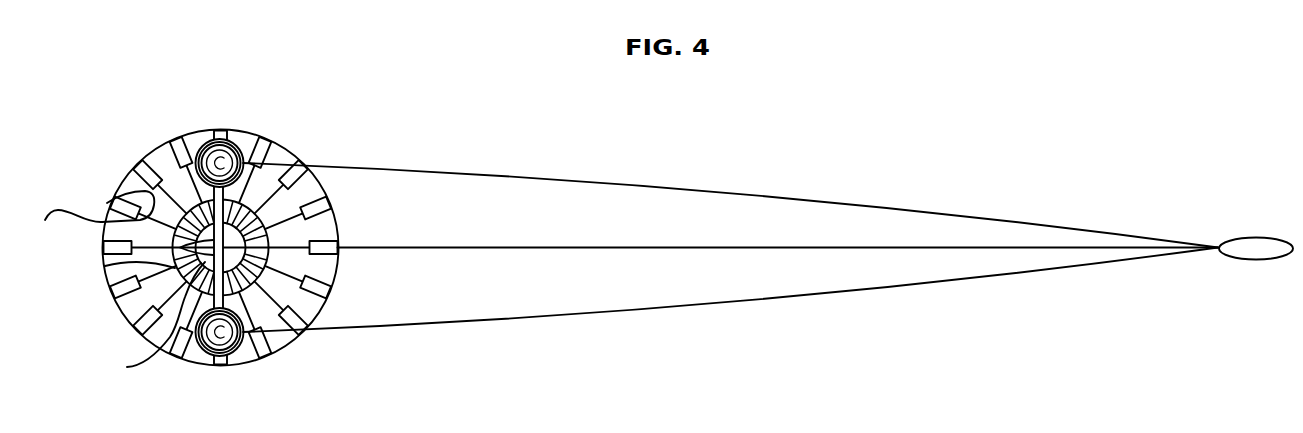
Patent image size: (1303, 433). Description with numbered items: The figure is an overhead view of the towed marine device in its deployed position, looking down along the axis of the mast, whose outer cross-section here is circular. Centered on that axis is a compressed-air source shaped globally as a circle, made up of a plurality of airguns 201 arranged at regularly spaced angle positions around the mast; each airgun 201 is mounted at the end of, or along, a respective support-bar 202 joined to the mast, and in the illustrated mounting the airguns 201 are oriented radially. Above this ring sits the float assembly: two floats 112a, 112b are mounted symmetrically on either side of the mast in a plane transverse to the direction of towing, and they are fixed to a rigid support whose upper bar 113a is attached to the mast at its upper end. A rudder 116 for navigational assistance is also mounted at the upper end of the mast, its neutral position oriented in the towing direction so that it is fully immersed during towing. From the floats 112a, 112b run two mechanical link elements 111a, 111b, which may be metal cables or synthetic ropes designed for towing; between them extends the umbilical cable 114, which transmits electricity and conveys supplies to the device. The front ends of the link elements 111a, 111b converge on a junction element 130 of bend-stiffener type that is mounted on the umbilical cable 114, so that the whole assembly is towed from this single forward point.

The mechanical link element 111a is at (653, 315).
The mechanical link element 111b is at (650, 182).
The float 112a is at (228, 346).
The float 112b is at (229, 158).
The upper bar 113a is at (142, 321).
The umbilical cable 114 is at (735, 247).
The rudder 116 is at (105, 266).
The junction element 130 is at (1254, 248).
The airgun 201 is at (53, 226).
The support-bar 202 is at (148, 194).